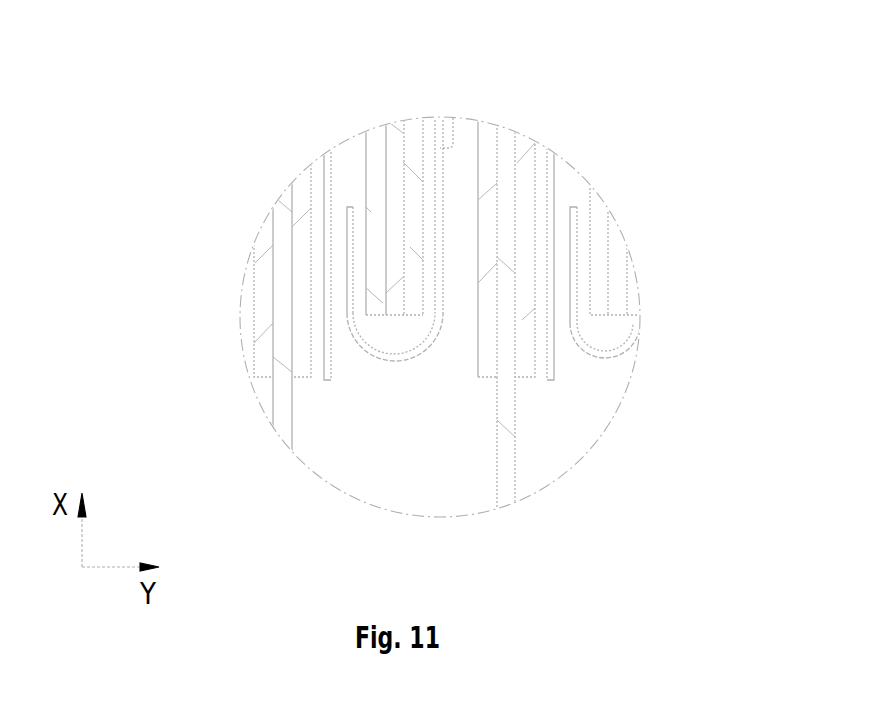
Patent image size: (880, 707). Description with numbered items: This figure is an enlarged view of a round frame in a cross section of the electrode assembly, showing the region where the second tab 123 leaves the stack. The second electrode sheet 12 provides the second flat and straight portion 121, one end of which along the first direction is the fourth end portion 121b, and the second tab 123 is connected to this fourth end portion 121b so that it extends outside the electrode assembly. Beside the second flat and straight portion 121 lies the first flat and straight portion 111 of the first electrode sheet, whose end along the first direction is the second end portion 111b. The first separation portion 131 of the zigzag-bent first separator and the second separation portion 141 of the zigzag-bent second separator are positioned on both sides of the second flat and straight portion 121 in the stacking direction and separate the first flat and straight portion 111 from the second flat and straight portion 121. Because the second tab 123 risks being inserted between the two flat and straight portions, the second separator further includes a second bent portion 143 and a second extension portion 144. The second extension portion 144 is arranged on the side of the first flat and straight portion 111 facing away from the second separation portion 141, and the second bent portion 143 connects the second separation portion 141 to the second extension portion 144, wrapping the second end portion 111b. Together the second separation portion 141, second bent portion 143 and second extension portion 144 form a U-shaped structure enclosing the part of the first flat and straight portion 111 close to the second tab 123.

The first flat and straight portion 111 is at (380, 130).
The second end portion 111b is at (393, 318).
The second separation portion 141 is at (455, 120).
The first separation portion 131 is at (327, 172).
The second extension portion 144 is at (347, 242).
The second bent portion 143 is at (372, 358).
The second flat and straight portion 121 is at (535, 347).
The fourth end portion 121b is at (488, 380).
The second tab 123 is at (276, 400).
The second electrode sheet 12 is at (697, 385).